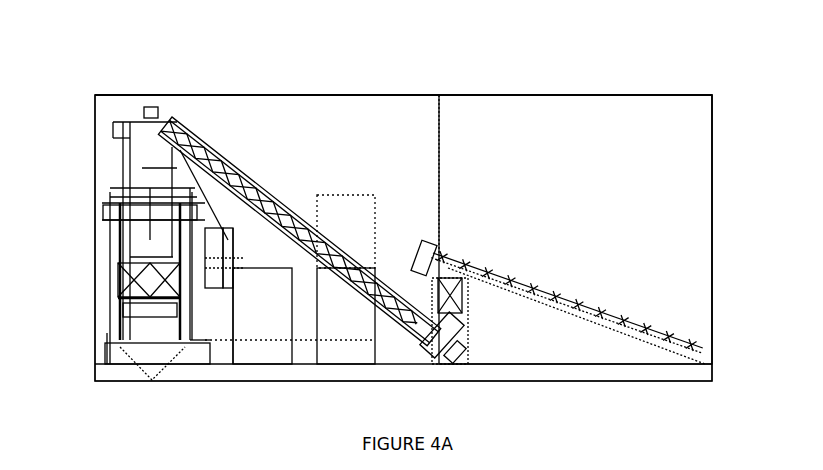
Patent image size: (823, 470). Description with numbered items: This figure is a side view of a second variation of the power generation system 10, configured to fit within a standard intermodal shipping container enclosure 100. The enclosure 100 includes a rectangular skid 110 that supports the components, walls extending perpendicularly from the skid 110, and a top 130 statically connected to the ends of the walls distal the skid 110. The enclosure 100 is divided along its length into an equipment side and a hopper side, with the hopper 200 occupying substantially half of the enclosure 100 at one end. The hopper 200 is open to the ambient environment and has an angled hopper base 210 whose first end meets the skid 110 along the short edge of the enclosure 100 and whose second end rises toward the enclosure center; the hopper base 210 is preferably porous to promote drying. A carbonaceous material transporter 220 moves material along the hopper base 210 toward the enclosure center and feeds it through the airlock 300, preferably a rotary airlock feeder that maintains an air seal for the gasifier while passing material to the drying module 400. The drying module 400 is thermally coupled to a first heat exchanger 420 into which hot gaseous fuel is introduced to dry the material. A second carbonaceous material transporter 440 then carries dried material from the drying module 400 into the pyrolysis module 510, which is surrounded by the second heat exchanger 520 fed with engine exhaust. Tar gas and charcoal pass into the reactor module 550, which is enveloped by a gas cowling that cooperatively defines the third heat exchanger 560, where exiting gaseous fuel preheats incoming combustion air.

The power generation system 10 is at (158, 62).
The enclosure 100 is at (320, 78).
The skid 110 is at (713, 156).
The top 130 is at (505, 94).
The hopper 200 is at (663, 243).
The hopper base 210 is at (575, 323).
The carbonaceous material transporter 220 is at (663, 320).
The airlock 300 is at (460, 317).
The drying module 400 is at (372, 332).
The first heat exchanger 420 is at (310, 272).
The second carbonaceous material transporter 440 is at (412, 343).
The pyrolysis module 510 is at (143, 148).
The second heat exchanger 520 is at (125, 178).
The reactor module 550 is at (135, 267).
The third heat exchanger 560 is at (115, 292).